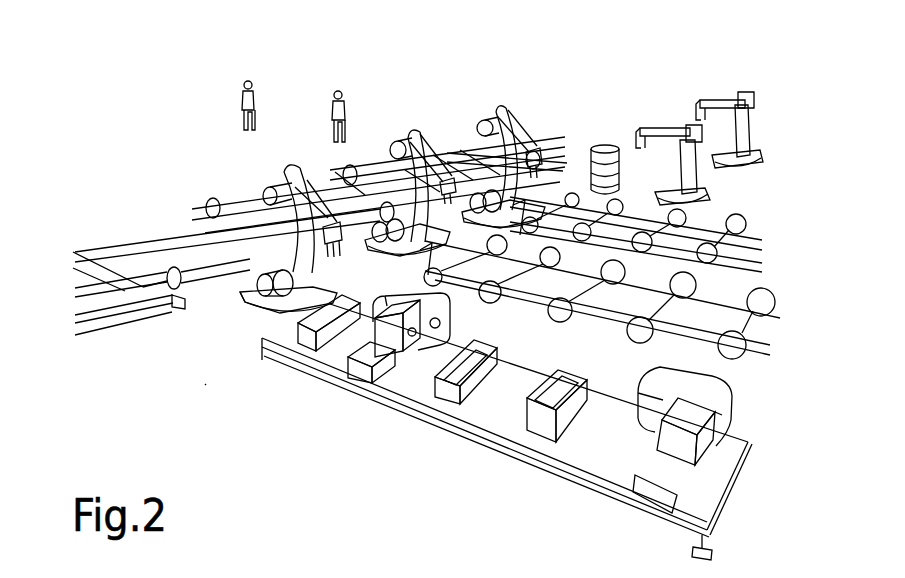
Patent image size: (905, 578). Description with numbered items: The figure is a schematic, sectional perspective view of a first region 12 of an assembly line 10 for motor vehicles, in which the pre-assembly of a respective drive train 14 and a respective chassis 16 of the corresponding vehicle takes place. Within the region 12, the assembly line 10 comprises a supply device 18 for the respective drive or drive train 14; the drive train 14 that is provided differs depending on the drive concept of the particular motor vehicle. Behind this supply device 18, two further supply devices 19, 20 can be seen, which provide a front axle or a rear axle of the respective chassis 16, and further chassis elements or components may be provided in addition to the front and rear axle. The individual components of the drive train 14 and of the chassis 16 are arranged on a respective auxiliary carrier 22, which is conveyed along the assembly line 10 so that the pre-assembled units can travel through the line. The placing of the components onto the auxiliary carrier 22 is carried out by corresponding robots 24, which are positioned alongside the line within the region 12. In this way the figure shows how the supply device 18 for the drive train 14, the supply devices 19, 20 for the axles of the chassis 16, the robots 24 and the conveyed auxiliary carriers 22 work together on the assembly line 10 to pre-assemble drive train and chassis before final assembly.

The assembly line 10 is at (180, 250).
The first region 12 is at (205, 385).
The drive train 14 is at (440, 450).
The chassis 16 is at (705, 215).
The supply device 18 is at (592, 455).
The supply device 19 is at (613, 308).
The supply device 20 is at (678, 240).
The auxiliary carrier 22 is at (150, 308).
The robot 24 is at (268, 190).